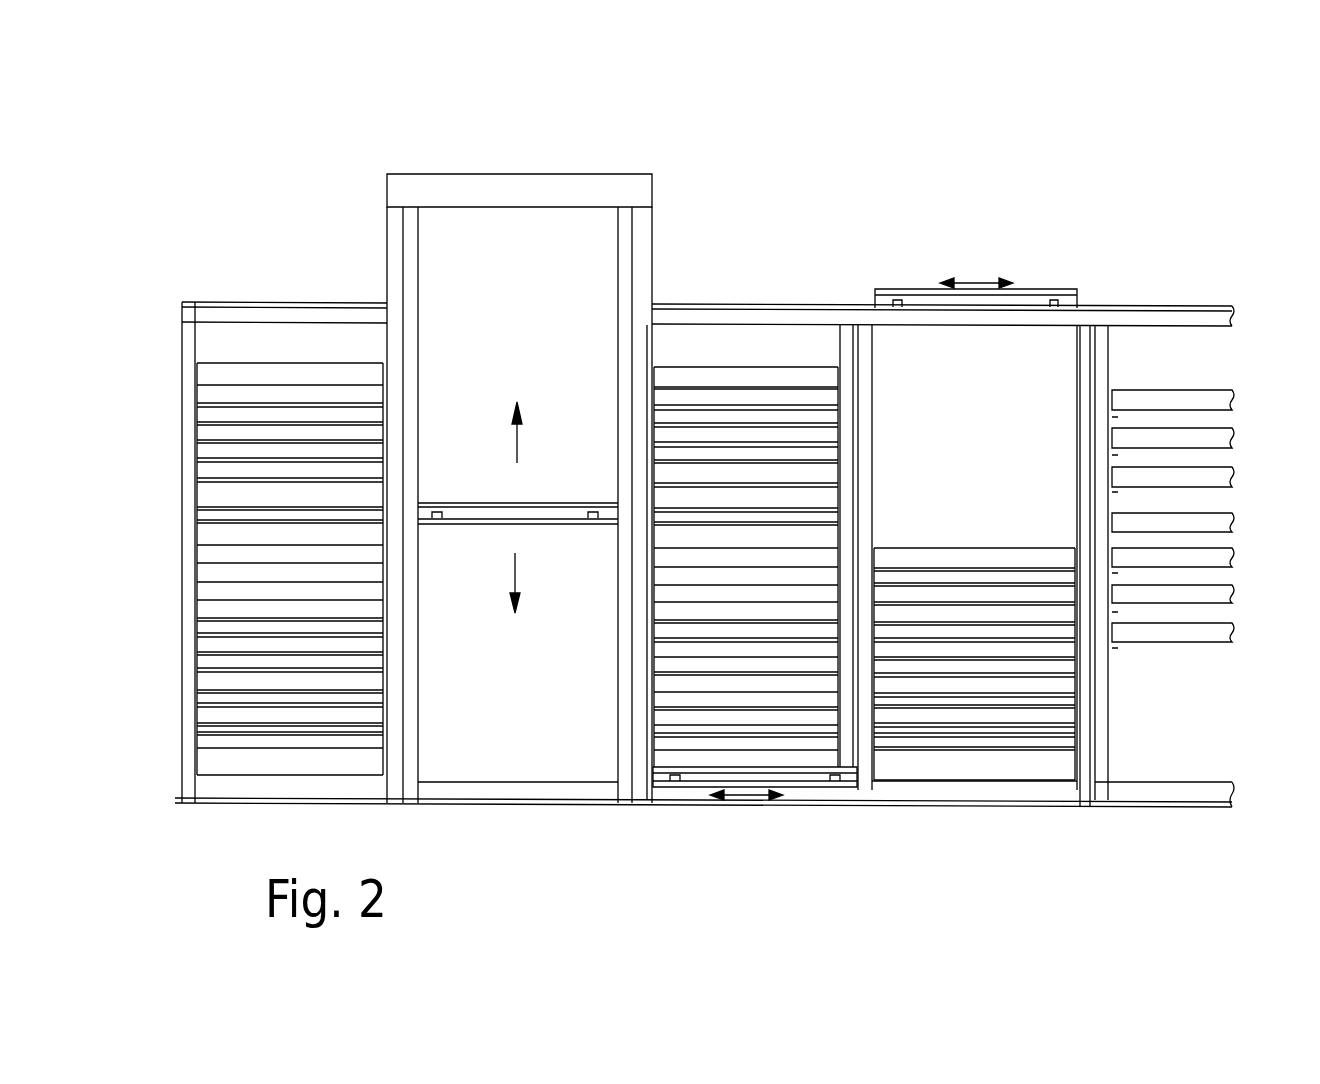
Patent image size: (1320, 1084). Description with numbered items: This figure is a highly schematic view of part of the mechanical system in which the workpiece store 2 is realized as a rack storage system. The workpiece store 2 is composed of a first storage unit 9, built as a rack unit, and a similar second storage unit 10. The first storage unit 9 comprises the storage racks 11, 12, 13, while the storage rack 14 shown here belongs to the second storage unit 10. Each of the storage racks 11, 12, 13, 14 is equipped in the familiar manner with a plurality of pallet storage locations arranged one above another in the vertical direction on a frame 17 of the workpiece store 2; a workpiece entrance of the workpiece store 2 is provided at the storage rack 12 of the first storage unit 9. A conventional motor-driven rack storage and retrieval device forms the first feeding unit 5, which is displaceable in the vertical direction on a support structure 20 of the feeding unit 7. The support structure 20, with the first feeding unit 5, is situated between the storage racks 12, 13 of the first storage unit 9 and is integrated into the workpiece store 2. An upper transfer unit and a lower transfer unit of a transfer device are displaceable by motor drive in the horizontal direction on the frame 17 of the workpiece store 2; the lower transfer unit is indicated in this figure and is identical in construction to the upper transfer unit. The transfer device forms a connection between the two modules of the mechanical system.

The first storage unit 9 is at (208, 197).
The workpiece store 2 is at (857, 227).
The second storage unit 10 is at (1220, 213).
The feeding unit 7 is at (660, 243).
The support structure 20 is at (412, 265).
The first feeding unit 5 is at (544, 502).
The storage rack 13 is at (348, 359).
The storage rack 12 is at (826, 359).
The storage rack 11 is at (1058, 359).
The storage rack 14 is at (1238, 359).
The frame 17 is at (1100, 710).